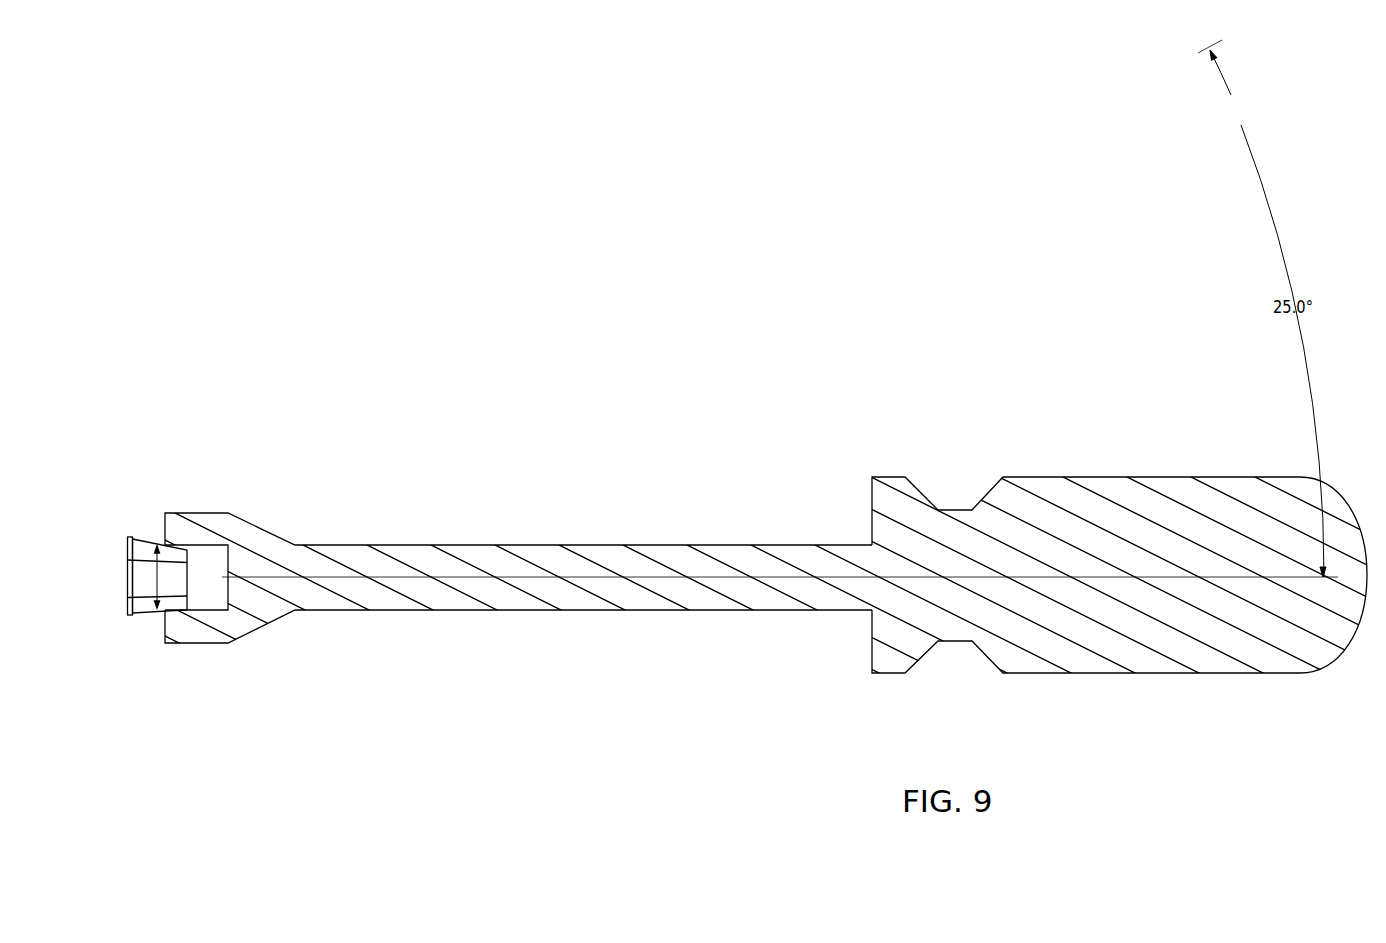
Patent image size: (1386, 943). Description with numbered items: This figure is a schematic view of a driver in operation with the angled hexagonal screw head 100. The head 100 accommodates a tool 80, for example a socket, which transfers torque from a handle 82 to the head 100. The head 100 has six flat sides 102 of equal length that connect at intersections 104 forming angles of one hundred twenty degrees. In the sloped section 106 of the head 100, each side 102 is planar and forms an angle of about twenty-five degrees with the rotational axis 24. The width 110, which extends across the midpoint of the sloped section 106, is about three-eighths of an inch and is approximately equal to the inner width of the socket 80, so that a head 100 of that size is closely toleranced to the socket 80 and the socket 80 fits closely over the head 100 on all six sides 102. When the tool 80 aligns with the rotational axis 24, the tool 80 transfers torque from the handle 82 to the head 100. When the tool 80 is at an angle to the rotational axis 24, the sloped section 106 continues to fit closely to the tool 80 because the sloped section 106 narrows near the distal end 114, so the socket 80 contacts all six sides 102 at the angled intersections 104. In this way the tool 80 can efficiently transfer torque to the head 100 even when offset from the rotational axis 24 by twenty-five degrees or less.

The rotational axis 24 is at (500, 577).
The tool 80 is at (758, 544).
The handle 82 is at (1112, 477).
The angled hexagonal head 100 is at (130, 568).
The flat sides 102 is at (142, 582).
The intersections 104 is at (143, 554).
The sloped section 106 is at (138, 613).
The width 110 is at (160, 572).
The distal end 114 is at (183, 577).